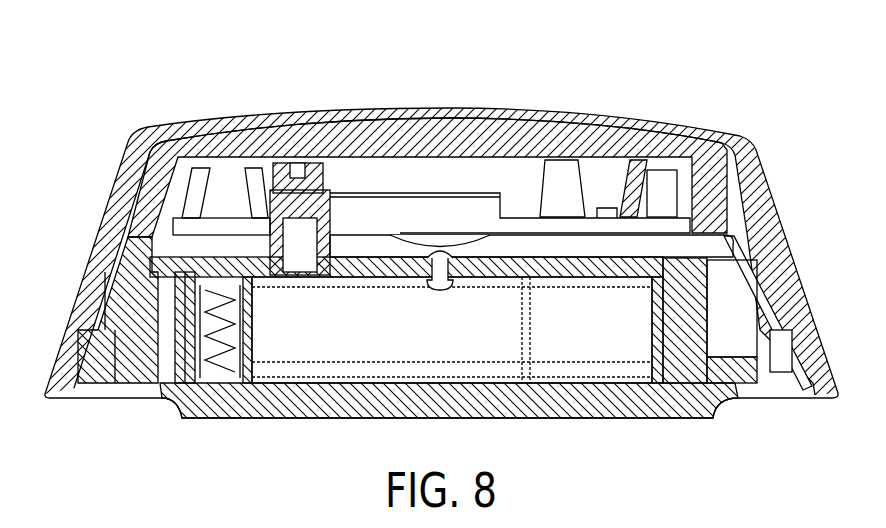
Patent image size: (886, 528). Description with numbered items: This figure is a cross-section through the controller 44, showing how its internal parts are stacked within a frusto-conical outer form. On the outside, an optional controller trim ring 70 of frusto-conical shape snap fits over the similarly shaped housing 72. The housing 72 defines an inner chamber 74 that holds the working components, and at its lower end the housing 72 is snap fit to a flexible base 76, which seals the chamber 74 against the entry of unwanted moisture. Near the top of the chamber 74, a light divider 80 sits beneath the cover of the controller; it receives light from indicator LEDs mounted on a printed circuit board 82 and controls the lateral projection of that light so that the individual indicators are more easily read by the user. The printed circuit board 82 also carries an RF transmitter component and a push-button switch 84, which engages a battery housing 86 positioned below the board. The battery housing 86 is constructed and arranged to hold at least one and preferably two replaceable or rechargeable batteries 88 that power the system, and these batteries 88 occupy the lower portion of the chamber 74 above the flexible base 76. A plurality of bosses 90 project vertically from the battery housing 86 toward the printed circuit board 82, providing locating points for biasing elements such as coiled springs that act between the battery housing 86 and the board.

The controller 44 is at (435, 245).
The controller trim ring 70 is at (770, 221).
The housing 72 is at (723, 187).
The inner chamber 74 is at (723, 278).
The flexible base 76 is at (667, 403).
The light divider 80 is at (627, 183).
The printed circuit board 82 is at (512, 217).
The push-button switch 84 is at (443, 233).
The battery housing 86 is at (690, 342).
The batteries 88 is at (342, 340).
The bosses 90 is at (273, 247).